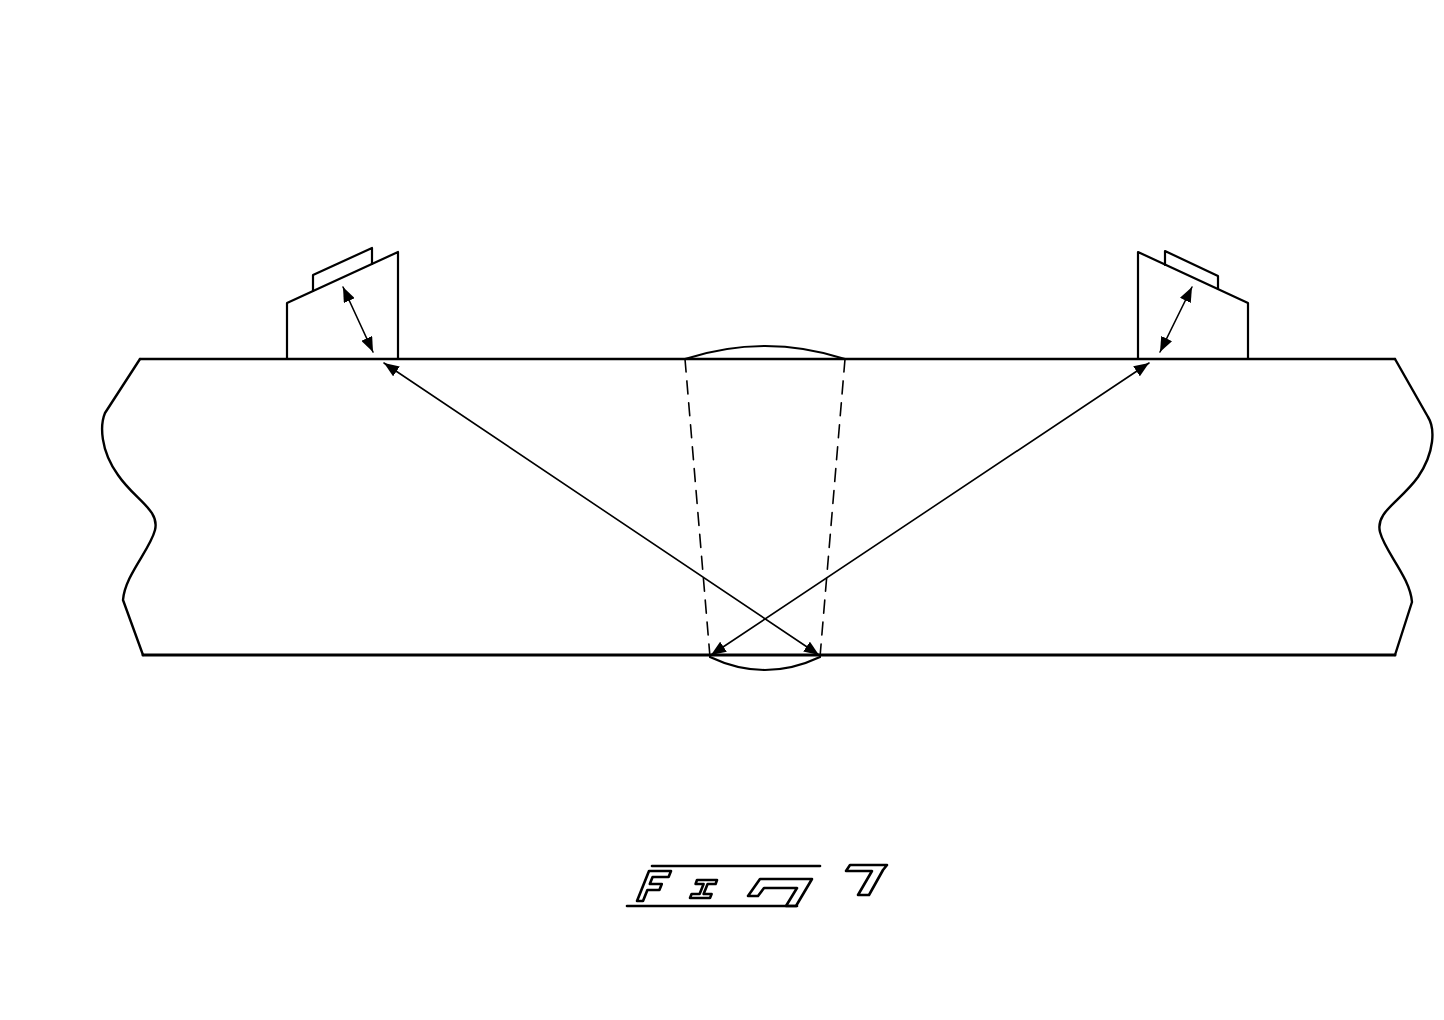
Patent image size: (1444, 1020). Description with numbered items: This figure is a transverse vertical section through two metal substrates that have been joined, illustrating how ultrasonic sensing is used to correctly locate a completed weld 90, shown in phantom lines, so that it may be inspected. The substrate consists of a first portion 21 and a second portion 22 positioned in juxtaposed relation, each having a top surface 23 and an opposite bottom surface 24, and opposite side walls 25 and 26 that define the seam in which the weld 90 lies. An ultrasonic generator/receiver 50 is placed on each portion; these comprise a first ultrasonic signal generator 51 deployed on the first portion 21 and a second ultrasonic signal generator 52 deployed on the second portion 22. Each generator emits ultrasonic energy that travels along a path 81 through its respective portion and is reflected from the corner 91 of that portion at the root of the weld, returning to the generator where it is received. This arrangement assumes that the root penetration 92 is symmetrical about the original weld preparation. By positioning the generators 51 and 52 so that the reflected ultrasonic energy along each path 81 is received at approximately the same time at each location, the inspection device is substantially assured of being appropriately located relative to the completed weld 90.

The first portion of the substrate 21 is at (1242, 540).
The second portion of the substrate 22 is at (370, 540).
The top surface 23 is at (228, 358).
The bottom surface 24 is at (262, 657).
The side wall 25 is at (845, 425).
The side wall 26 is at (694, 422).
The ultrasonic generator/receiver 50 is at (303, 178).
The first ultrasonic signal generator 51 is at (1230, 300).
The second ultrasonic signal generator 52 is at (305, 308).
The path 81 is at (495, 438).
The completed weld 90 is at (755, 373).
The corner 91 is at (710, 660).
The root penetration 92 is at (762, 684).